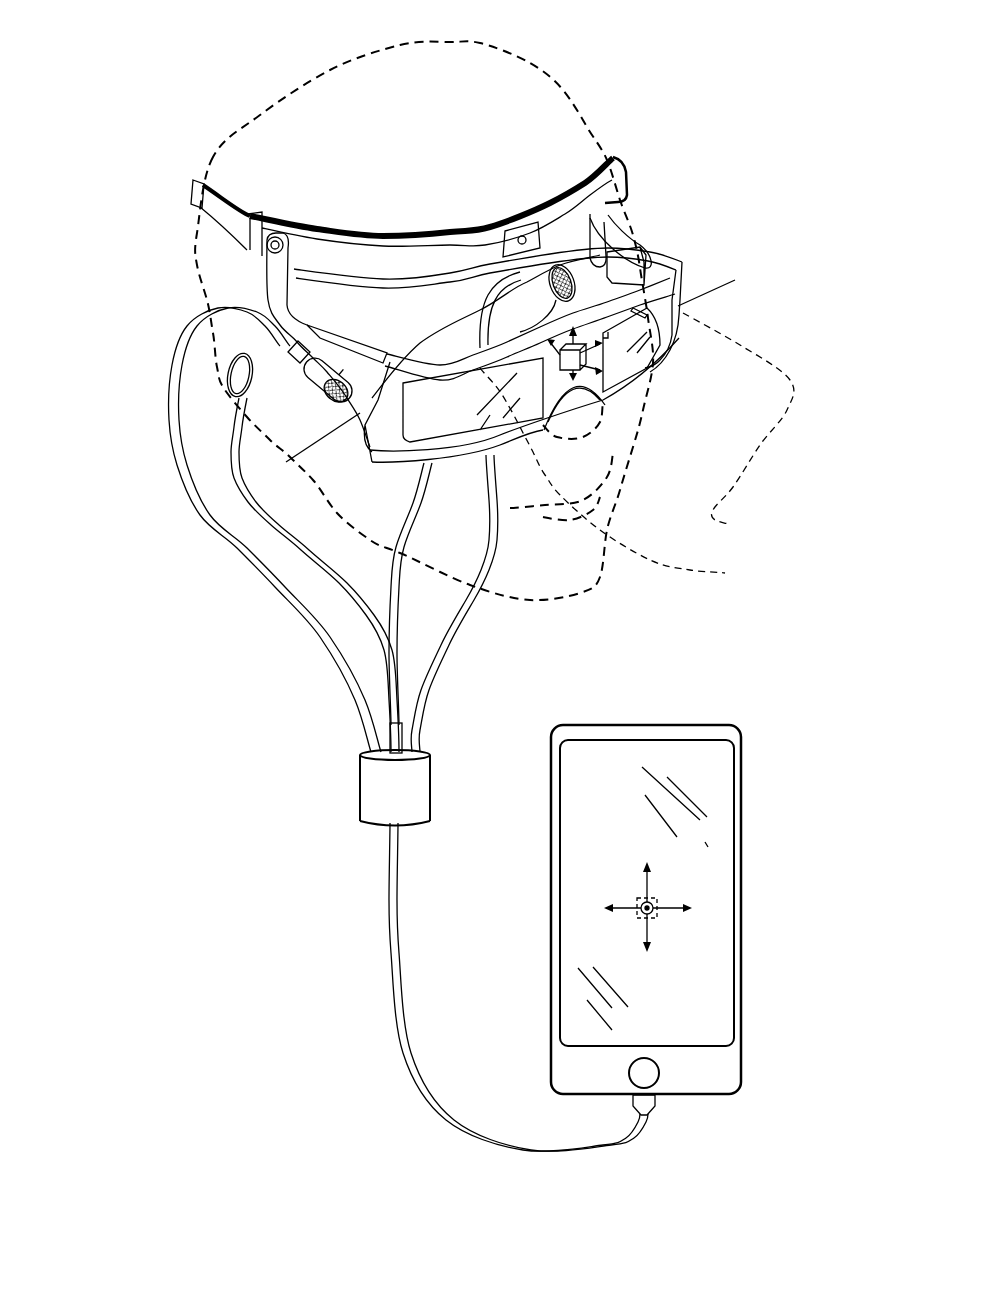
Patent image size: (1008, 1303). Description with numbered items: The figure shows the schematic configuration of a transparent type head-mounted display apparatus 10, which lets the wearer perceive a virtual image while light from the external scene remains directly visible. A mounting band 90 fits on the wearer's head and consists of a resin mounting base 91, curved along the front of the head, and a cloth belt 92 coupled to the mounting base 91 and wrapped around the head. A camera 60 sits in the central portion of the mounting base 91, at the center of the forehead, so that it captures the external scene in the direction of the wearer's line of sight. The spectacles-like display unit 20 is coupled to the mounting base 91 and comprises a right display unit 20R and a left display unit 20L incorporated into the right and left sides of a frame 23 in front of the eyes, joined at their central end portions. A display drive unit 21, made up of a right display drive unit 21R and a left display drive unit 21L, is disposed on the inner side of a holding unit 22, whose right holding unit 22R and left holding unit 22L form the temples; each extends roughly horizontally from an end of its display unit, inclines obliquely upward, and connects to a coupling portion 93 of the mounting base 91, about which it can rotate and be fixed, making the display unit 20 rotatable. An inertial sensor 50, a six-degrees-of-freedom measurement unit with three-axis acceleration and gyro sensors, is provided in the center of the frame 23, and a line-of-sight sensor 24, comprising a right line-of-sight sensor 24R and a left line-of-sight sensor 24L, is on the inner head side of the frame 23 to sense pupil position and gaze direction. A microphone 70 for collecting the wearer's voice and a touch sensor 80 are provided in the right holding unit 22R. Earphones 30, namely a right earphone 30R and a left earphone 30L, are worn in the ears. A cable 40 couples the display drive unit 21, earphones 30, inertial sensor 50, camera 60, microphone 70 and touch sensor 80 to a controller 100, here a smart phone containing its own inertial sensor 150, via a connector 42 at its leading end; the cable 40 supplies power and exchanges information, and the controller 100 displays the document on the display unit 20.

The head-mounted display apparatus 10 is at (751, 87).
The display unit 20 is at (733, 365).
The left display unit 20L is at (667, 350).
The right display unit 20R is at (522, 404).
The display drive unit 21 is at (405, 113).
The left display drive unit 21L is at (592, 246).
The right display drive unit 21R is at (340, 320).
The holding unit 22 is at (217, 17).
The left holding unit 22L is at (590, 210).
The right holding unit 22R is at (342, 327).
The frame 23 is at (451, 357).
The line-of-sight sensor 24 is at (773, 512).
The left line-of-sight sensor 24L is at (738, 427).
The right line-of-sight sensor 24R is at (627, 478).
The earphones 30 is at (194, 578).
The left earphone 30L is at (233, 372).
The right earphone 30R is at (229, 378).
The cable 40 is at (451, 743).
The connector 42 is at (655, 1105).
The inertial sensor 50 is at (585, 322).
The camera 60 is at (520, 233).
The microphone 70 is at (318, 395).
The touch sensor 80 is at (292, 346).
The mounting band 90 is at (625, 169).
The mounting base 91 is at (587, 167).
The belt 92 is at (207, 185).
The coupling portion 93 is at (268, 247).
The controller 100 is at (723, 710).
The inertial sensor 150 is at (655, 895).